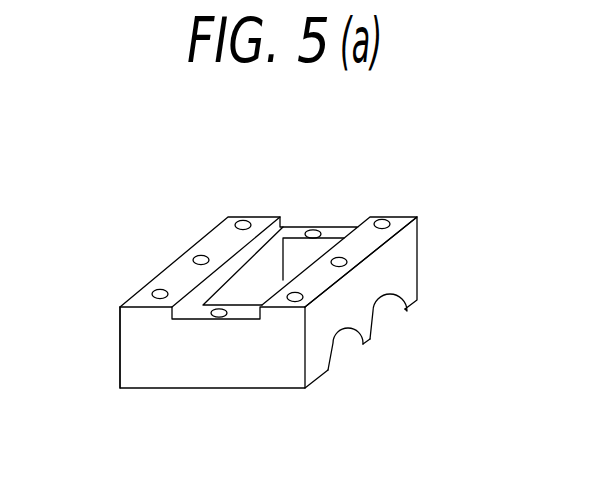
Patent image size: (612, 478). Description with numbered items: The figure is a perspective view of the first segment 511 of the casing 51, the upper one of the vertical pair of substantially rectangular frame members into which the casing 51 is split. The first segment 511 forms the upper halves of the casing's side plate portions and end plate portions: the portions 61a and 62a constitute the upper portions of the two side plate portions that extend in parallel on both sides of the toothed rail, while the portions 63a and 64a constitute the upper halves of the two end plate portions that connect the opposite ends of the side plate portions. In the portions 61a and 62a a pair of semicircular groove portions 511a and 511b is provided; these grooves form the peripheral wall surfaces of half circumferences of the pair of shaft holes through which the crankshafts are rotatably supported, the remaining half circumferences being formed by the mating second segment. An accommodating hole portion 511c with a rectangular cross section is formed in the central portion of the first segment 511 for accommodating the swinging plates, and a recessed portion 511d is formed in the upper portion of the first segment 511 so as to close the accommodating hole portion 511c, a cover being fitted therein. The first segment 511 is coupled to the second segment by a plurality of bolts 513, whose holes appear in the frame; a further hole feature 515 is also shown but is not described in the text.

The casing 51 is at (418, 287).
The first segment 511 is at (420, 255).
The semicircular groove portion 511a is at (332, 356).
The semicircular groove portion 511b is at (373, 316).
The accommodating hole portion 511c is at (300, 253).
The recessed portion 511d is at (186, 311).
The bolts 513 is at (246, 220).
The floor holes 515 is at (219, 318).
The upper portion of side plate portion 61a is at (312, 359).
The upper portion of side plate portion 62a is at (118, 368).
The upper portion of end plate portion 63a is at (172, 378).
The upper portion of end plate portion 64a is at (322, 228).